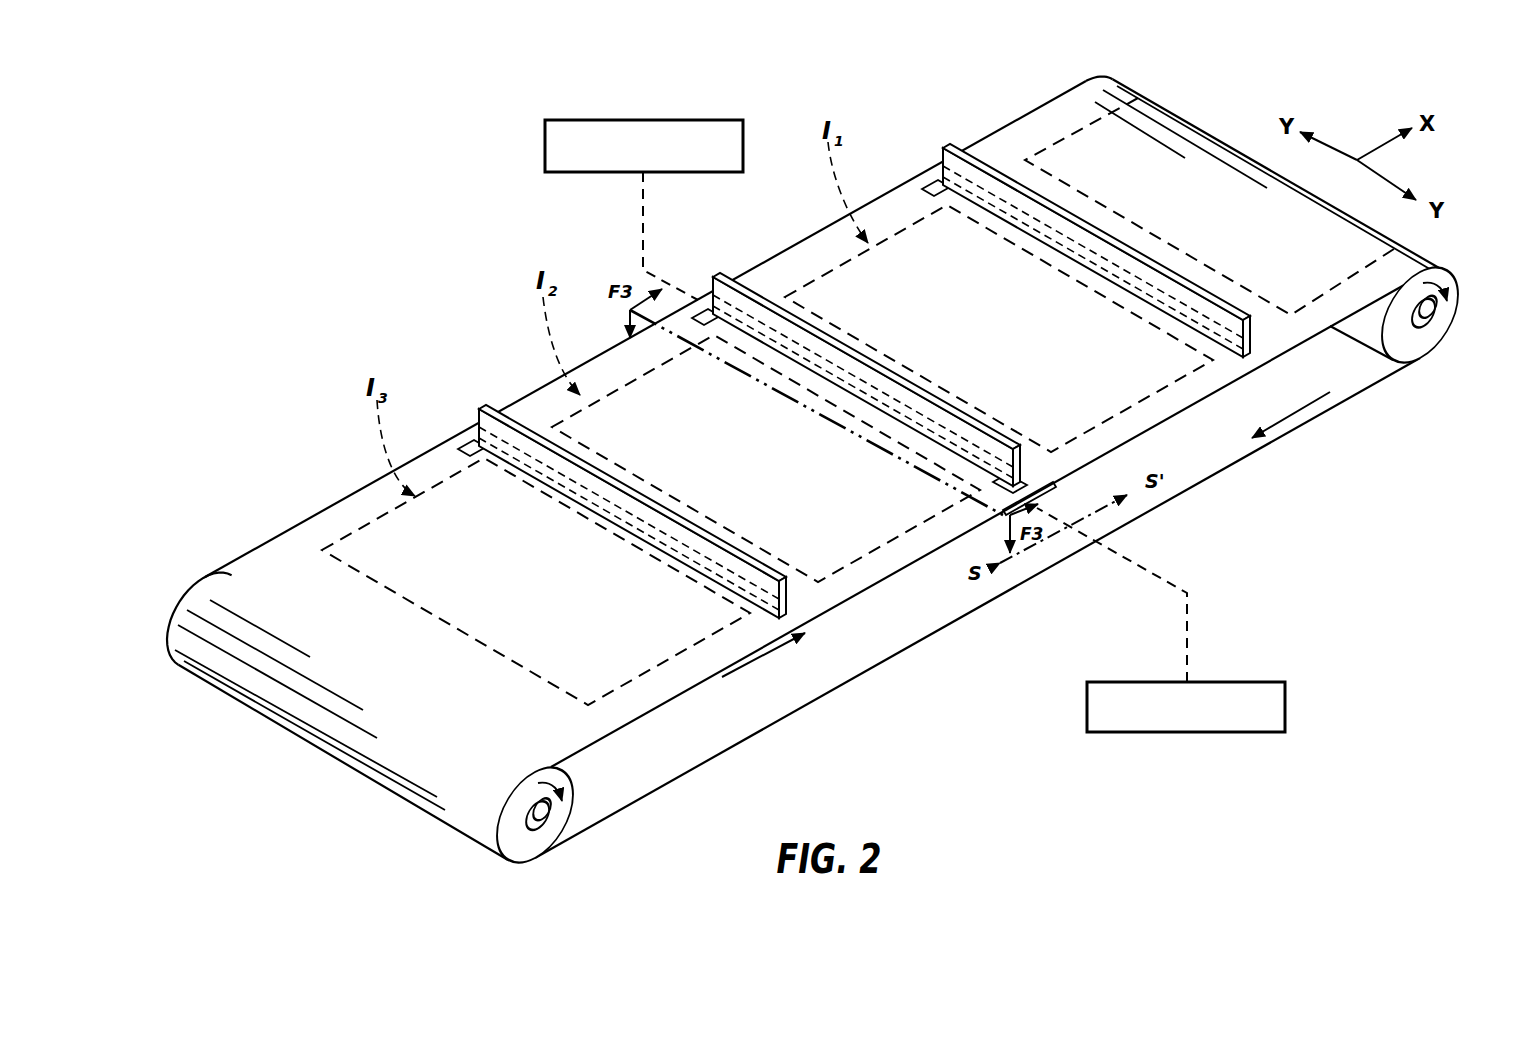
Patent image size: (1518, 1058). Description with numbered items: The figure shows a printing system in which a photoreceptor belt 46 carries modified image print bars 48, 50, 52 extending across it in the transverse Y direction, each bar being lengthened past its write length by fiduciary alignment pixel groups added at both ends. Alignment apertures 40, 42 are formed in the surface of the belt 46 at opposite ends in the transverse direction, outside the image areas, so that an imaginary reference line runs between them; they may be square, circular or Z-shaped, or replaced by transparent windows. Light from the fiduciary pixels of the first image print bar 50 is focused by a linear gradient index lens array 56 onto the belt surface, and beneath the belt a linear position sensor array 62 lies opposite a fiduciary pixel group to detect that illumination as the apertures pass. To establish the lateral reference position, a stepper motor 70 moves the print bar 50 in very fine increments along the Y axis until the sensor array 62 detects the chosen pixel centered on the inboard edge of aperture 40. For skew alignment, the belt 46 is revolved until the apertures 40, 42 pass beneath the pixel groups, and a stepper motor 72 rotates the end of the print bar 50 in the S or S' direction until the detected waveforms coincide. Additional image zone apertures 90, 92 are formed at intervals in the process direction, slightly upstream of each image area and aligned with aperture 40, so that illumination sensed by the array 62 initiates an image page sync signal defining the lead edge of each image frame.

The alignment aperture 40 is at (698, 311).
The alignment aperture 42 is at (981, 493).
The photoreceptor belt 46 is at (254, 595).
The image print bar 48 is at (480, 407).
The image print bar 50 is at (719, 275).
The image print bar 52 is at (960, 152).
The linear gradient index lens array 56 is at (737, 313).
The linear position sensor array 62 is at (1053, 487).
The stepper motor 70 is at (553, 131).
The stepper motor 72 is at (1266, 690).
The image zone aperture 90 is at (465, 447).
The image zone aperture 92 is at (932, 184).